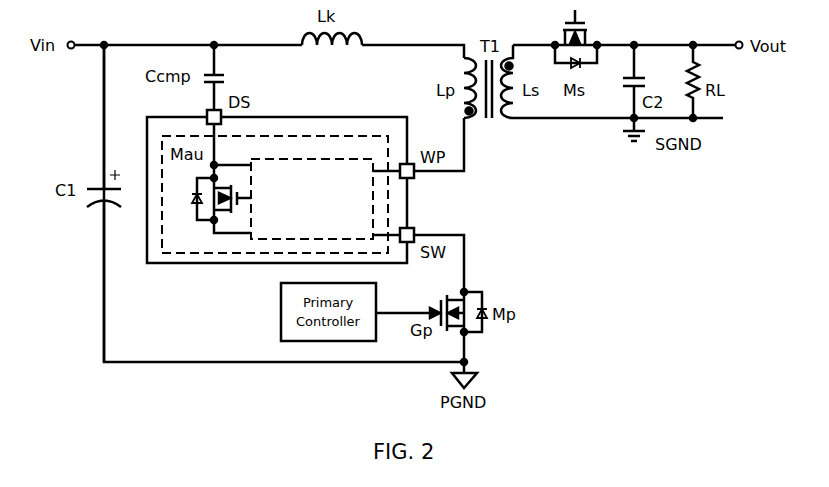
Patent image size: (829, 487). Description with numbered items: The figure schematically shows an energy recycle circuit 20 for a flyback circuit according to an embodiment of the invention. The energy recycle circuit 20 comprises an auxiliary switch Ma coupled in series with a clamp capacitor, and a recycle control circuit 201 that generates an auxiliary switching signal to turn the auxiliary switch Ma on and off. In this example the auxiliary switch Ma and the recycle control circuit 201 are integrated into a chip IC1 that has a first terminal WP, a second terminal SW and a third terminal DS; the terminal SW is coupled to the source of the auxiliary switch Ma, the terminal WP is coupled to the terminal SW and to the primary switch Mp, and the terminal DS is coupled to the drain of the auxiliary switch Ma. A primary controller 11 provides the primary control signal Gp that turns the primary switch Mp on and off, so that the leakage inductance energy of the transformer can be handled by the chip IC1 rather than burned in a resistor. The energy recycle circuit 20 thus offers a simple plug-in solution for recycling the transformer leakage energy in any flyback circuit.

The energy recycle circuit 20 is at (275, 194).
The recycle control circuit 201 is at (326, 158).
The primary controller 11 is at (376, 293).
The chip IC1 is at (352, 117).